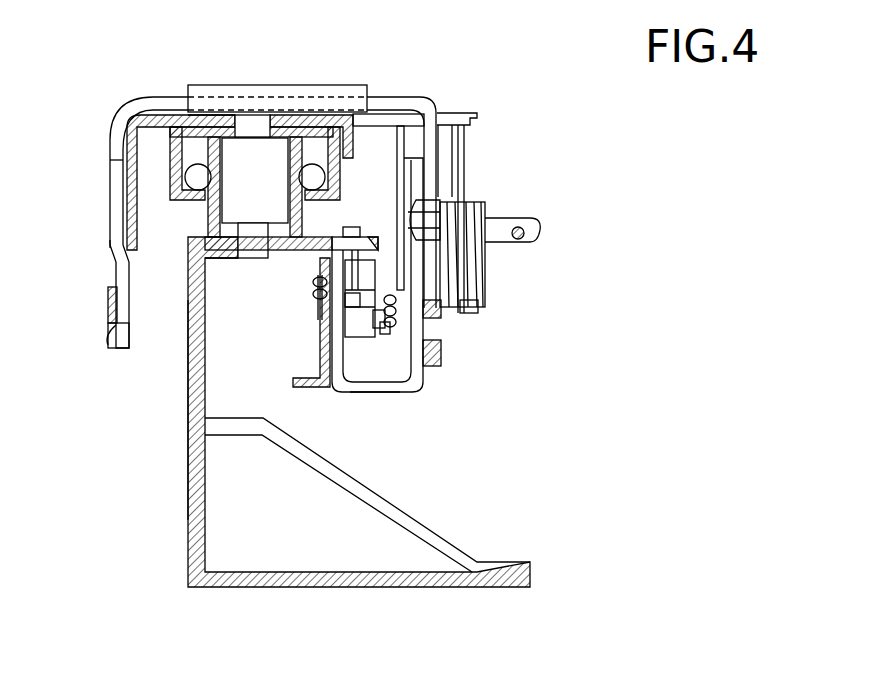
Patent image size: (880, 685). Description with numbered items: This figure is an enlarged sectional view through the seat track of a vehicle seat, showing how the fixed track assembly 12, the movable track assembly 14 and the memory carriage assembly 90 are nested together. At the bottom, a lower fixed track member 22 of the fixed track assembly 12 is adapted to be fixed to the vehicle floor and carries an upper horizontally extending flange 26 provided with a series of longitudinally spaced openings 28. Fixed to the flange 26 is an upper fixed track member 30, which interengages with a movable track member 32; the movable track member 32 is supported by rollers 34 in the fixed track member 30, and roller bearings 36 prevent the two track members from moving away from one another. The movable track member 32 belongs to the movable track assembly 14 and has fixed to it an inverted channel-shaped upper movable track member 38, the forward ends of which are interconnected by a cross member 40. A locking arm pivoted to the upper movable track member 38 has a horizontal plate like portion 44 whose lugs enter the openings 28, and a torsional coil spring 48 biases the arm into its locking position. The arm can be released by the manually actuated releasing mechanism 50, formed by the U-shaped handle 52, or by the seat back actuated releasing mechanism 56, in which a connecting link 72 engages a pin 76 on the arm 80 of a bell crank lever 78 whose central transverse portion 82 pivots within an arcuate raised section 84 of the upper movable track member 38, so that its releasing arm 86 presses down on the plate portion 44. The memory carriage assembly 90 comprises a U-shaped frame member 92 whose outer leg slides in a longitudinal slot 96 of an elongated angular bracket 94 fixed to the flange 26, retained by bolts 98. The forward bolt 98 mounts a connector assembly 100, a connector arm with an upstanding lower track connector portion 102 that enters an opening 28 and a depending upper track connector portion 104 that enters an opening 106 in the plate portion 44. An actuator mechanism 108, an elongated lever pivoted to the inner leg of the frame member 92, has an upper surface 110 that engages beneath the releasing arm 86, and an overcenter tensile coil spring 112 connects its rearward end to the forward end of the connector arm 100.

The fixed track assembly 12 is at (186, 385).
The movable track assembly 14 is at (126, 181).
The lower fixed track member 22 is at (206, 341).
The upper horizontally extending flange 26 is at (210, 259).
The openings 28 is at (326, 236).
The upper fixed track member 30 is at (212, 210).
The movable track member 32 is at (124, 160).
The rollers 34 is at (266, 188).
The roller bearings 36 is at (196, 176).
The upper movable track member 38 is at (230, 114).
The cross member 40 is at (470, 112).
The plate like portion 44 is at (360, 340).
The torsional coil spring 48 is at (479, 300).
The manually actuated releasing mechanism 50 is at (508, 216).
The U-shaped actuating member or handle 52 is at (522, 238).
The seat back actuated releasing mechanism 56 is at (106, 343).
The connecting link 72 is at (107, 305).
The pin 76 is at (128, 325).
The bell crank lever 78 is at (108, 250).
The arm 80 is at (117, 190).
The central transverse portion 82 is at (396, 96).
The arcuate raised section 84 is at (290, 92).
The releasing arm 86 is at (436, 139).
The memory carriage assembly 90 is at (426, 382).
The U-shaped frame member 92 is at (342, 394).
The elongated angular bracket 94 is at (318, 366).
The longitudinal slot 96 is at (345, 318).
The bolts 98 is at (314, 281).
The connector assembly 100 is at (314, 293).
The lower track connector portion 102 is at (350, 228).
The upper track connector portion 104 is at (382, 335).
The opening 106 is at (398, 317).
The actuator mechanism 108 is at (455, 268).
The upper surface 110 is at (434, 198).
The overcenter tensile coil spring 112 is at (426, 345).